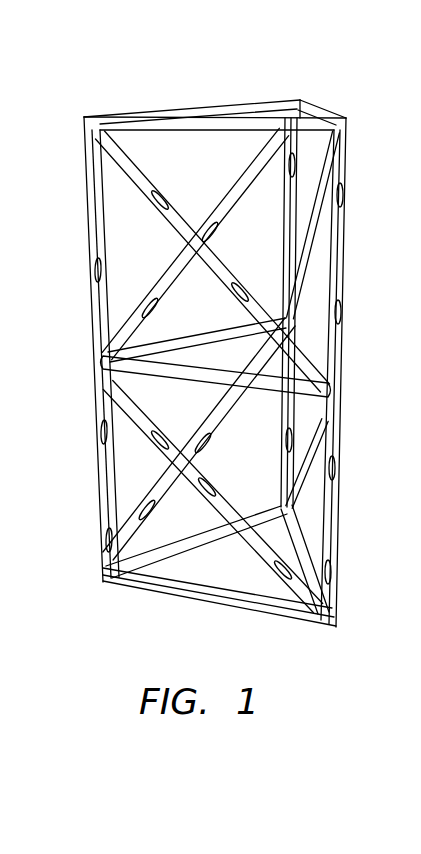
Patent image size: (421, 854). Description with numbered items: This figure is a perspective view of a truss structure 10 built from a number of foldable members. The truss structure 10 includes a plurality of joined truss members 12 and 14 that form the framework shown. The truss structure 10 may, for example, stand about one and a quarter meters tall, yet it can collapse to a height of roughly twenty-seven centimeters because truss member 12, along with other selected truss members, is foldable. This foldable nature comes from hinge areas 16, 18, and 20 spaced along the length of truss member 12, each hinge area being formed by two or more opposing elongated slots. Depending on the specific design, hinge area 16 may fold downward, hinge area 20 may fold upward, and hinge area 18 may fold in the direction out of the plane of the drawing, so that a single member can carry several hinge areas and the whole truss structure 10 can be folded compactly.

The truss structure 10 is at (168, 80).
The truss member 12 is at (150, 588).
The truss member 14 is at (333, 496).
The hinge area 16 is at (150, 430).
The hinge area 18 is at (200, 498).
The hinge area 20 is at (267, 564).